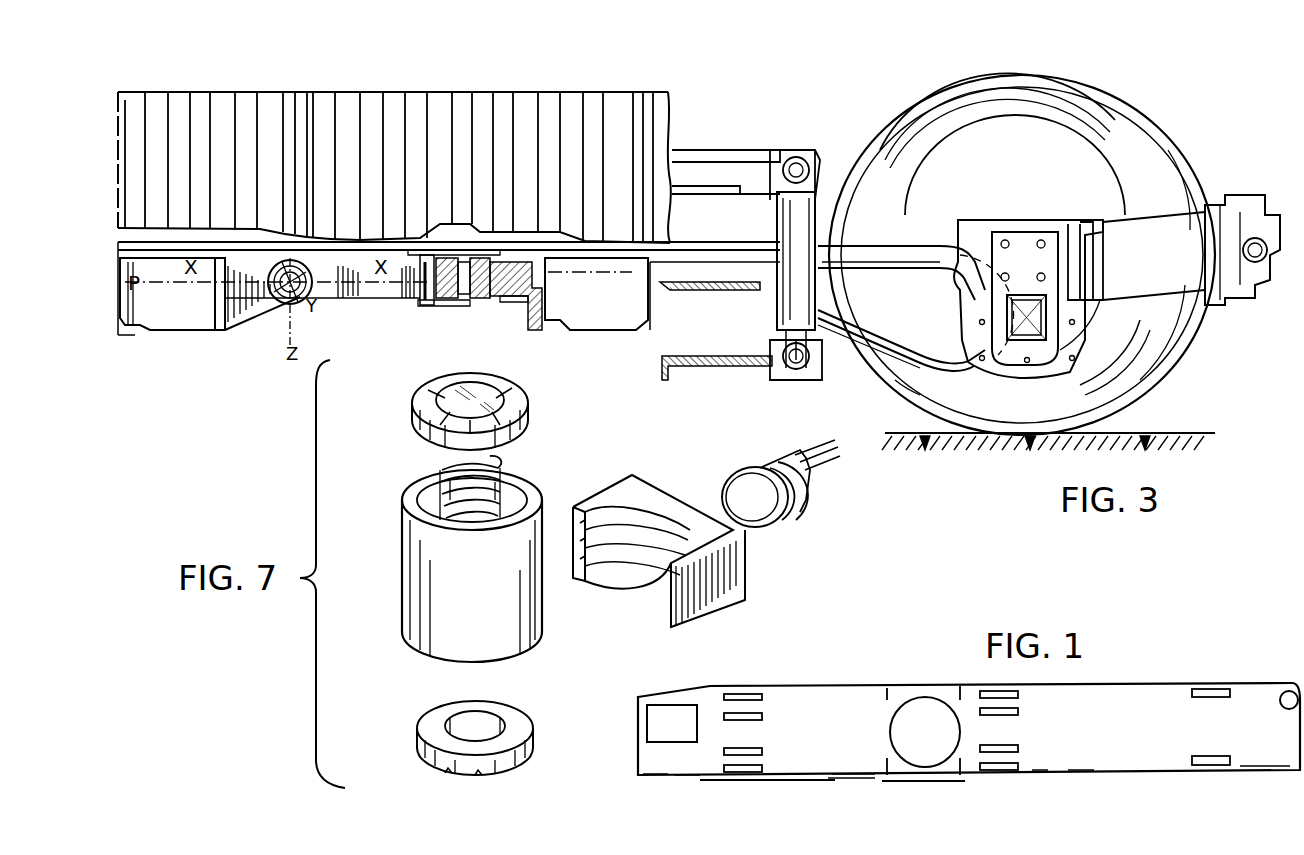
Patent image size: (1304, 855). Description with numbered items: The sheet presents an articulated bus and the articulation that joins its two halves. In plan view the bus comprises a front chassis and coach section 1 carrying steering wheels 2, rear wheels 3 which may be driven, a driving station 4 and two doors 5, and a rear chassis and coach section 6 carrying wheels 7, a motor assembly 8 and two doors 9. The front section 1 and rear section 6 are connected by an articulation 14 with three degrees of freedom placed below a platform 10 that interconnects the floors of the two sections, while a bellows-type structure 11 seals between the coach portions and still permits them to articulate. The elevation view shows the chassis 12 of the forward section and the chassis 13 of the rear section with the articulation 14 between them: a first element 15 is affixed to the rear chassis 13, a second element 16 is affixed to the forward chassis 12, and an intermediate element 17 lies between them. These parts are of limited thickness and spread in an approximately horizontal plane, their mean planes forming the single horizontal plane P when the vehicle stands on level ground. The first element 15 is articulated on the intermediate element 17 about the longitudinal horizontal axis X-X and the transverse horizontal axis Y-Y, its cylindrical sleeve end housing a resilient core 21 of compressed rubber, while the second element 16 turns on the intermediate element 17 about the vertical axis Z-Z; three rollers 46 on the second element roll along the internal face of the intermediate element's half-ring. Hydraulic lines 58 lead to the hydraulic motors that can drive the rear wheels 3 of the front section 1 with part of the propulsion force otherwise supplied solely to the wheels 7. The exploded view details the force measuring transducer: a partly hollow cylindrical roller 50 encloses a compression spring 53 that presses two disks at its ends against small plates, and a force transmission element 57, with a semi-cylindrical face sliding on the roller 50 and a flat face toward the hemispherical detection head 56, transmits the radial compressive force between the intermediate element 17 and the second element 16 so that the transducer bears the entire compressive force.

In FIG. 1, the front chassis and coach section 1 is at (1165, 790).
In FIG. 1, the steering wheels 2 is at (1218, 698).
In FIG. 3, the rear wheels 3 is at (1185, 155).
In FIG. 1, the rear wheels 3 is at (1016, 702).
In FIG. 1, the driving station 4 is at (1282, 708).
In FIG. 1, the doors 5 is at (1072, 778).
In FIG. 1, the rear chassis and coach section 6 is at (808, 790).
In FIG. 1, the wheels 7 is at (764, 708).
In FIG. 1, the motor assembly 8 is at (672, 723).
In FIG. 1, the doors 9 is at (688, 780).
In FIG. 3, the platform 10 is at (330, 238).
In FIG. 1, the platform 10 is at (925, 732).
In FIG. 3, the bellows-type structure 11 is at (665, 133).
In FIG. 1, the bellows-type structure 11 is at (942, 786).
In FIG. 3, the chassis 12 is at (596, 294).
In FIG. 3, the chassis 13 is at (172, 294).
In FIG. 3, the spacer 14 is at (354, 302).
In FIG. 3, the first element 15 is at (248, 308).
In FIG. 3, the second element 16 is at (510, 290).
In FIG. 3, the intermediate element 17 is at (396, 300).
In FIG. 3, the resilient core 21 is at (300, 290).
In FIG. 3, the rollers 46 is at (418, 278).
In FIG. 7, the cylindrical rollers 50 is at (410, 566).
In FIG. 7, the compression spring 53 is at (458, 476).
In FIG. 7, the hemispherical detection head 56 is at (762, 465).
In FIG. 7, the force transmission element 57 is at (632, 490).
In FIG. 3, the hydraulic lines 58 is at (880, 262).